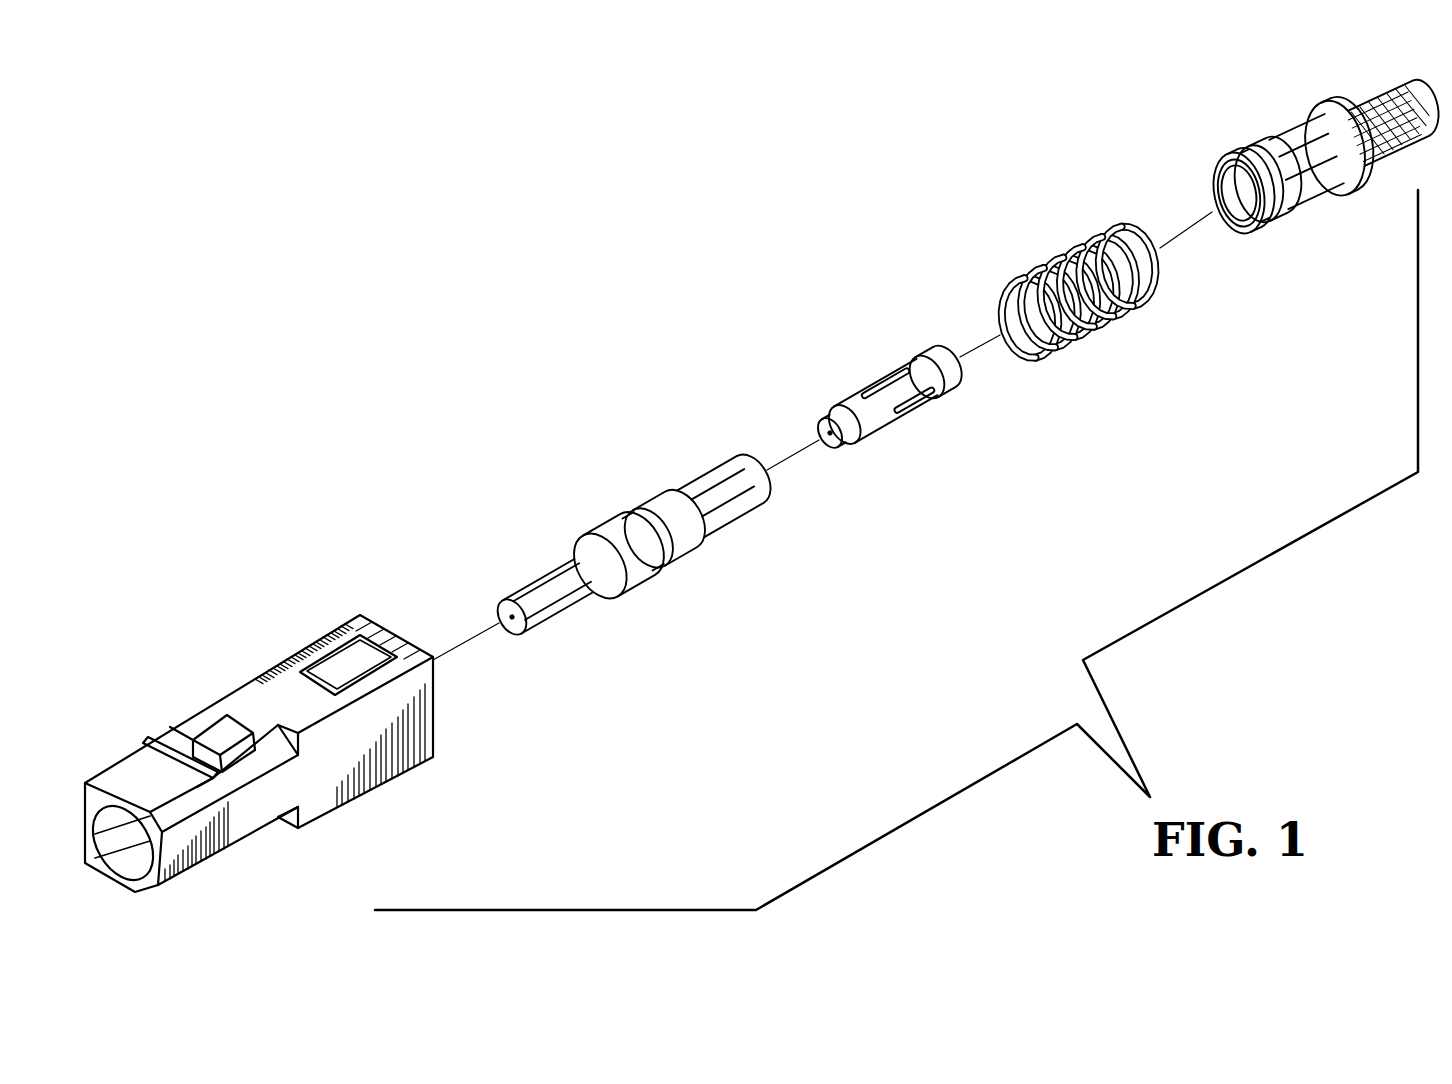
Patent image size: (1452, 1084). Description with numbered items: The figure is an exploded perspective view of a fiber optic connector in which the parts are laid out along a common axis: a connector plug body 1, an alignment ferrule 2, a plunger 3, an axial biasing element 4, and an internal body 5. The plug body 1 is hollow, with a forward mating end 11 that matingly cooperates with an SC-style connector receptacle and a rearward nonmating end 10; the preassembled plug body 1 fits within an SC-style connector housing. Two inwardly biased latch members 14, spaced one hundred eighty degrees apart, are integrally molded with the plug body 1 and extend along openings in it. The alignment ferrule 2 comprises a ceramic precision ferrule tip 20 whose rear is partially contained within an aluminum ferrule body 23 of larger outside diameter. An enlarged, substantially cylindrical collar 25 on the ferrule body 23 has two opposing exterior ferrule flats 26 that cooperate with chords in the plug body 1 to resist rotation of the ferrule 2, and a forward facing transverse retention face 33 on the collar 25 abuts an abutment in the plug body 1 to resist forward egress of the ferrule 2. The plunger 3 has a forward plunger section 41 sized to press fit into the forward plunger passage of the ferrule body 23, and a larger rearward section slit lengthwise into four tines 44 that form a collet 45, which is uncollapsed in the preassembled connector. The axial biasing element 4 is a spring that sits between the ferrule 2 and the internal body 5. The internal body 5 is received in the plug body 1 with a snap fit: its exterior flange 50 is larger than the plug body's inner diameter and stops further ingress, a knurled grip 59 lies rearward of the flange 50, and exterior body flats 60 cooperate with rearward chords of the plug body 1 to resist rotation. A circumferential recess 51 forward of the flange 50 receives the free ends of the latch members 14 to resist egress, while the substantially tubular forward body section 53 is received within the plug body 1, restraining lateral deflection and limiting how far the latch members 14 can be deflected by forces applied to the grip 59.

The connector plug body 1 is at (256, 726).
The rearward nonmating end 10 is at (380, 612).
The forward mating end 11 is at (104, 868).
The latch members 14 is at (345, 668).
The alignment ferrule 2 is at (628, 545).
The ferrule tip 20 is at (533, 588).
The ferrule body 23 is at (703, 500).
The collar 25 is at (650, 563).
The ferrule flats 26 is at (630, 520).
The retention face 33 is at (627, 587).
The plunger 3 is at (897, 414).
The forward plunger section 41 is at (850, 440).
The tines 44 is at (922, 382).
The collet 45 is at (934, 352).
The axial biasing element 4 is at (1050, 232).
The internal body 5 is at (1287, 180).
The exterior flange 50 is at (1367, 170).
The circumferential recess 51 is at (1292, 193).
The forward body section 53 is at (1250, 238).
The grip 59 is at (1373, 100).
The body flats 60 is at (1320, 188).